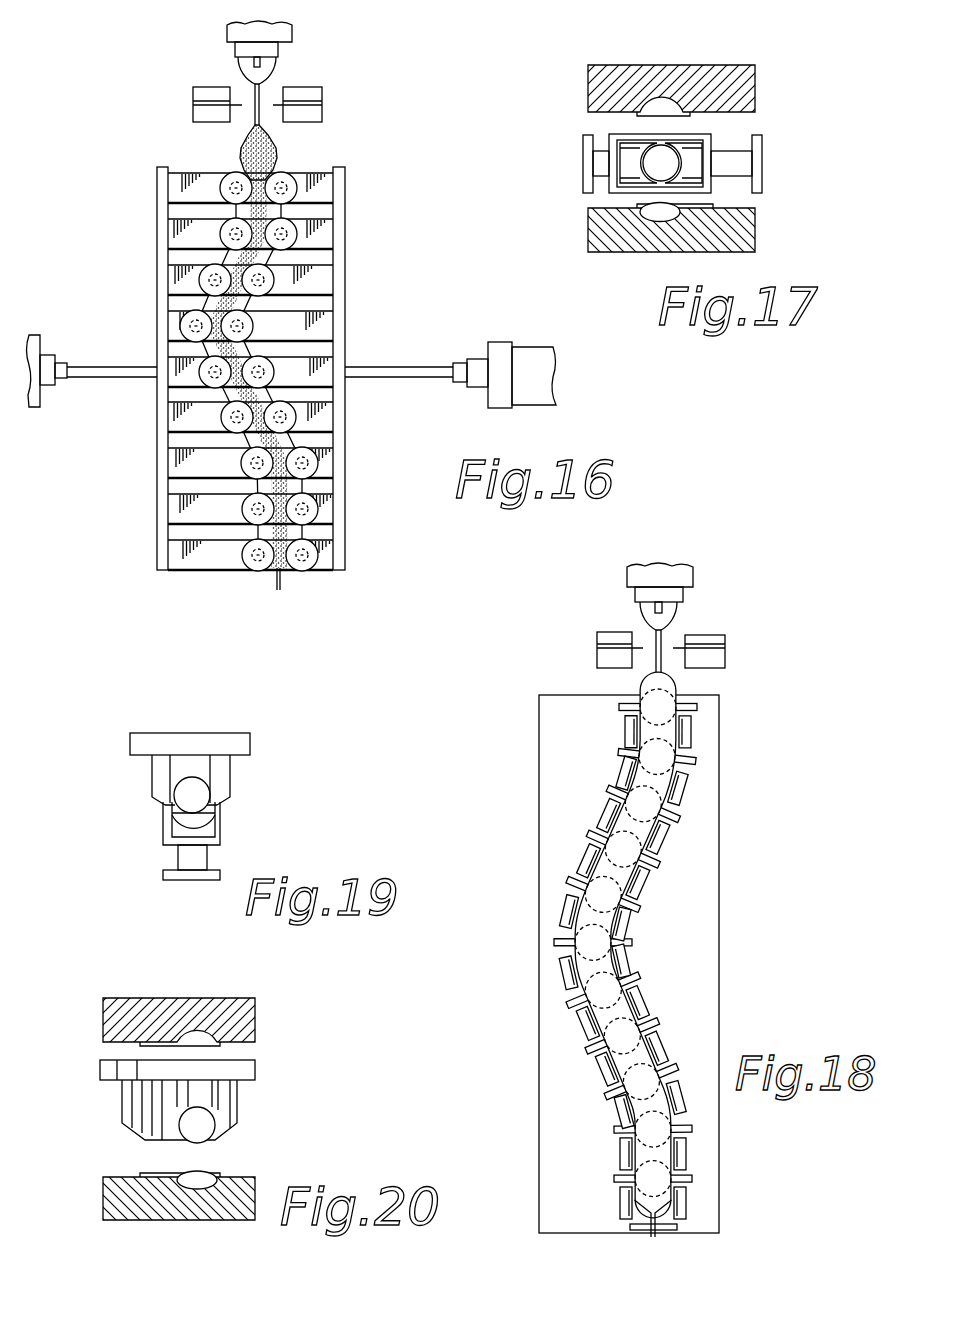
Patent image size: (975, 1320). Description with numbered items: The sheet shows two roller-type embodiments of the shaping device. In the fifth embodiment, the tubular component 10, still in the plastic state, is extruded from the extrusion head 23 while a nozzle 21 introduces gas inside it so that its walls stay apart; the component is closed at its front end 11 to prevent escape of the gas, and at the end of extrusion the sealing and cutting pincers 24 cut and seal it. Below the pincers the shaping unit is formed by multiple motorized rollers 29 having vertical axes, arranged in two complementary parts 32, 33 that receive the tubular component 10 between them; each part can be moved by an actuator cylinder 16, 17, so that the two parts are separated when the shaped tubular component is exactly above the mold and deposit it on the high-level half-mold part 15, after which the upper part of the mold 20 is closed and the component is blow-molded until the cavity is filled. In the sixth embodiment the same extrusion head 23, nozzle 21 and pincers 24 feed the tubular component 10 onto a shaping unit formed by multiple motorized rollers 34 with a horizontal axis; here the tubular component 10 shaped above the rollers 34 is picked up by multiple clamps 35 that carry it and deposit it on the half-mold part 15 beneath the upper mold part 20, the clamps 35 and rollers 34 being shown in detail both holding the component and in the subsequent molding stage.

In FIG. 16, the tubular component 10 is at (283, 447).
In FIG. 18, the tubular component 10 is at (663, 760).
In FIG. 19, the tubular component 10 is at (183, 792).
In FIG. 20, the tubular component 10 is at (188, 1123).
In FIG. 16, the end 11 is at (278, 580).
In FIG. 17, the high-level half-mold part 15 is at (660, 213).
In FIG. 20, the high-level half-mold part 15 is at (193, 1180).
In FIG. 16, the actuator cylinder 16 is at (38, 407).
In FIG. 16, the actuator cylinder 17 is at (530, 358).
In FIG. 17, the upper part of the mold 20 is at (738, 85).
In FIG. 20, the upper part of the mold 20 is at (245, 1013).
In FIG. 16, the nozzle 21 is at (272, 33).
In FIG. 18, the nozzle 21 is at (662, 577).
In FIG. 16, the extrusion head 23 is at (235, 43).
In FIG. 18, the extrusion head 23 is at (683, 592).
In FIG. 16, the sealing and cutting pincers 24 is at (203, 90).
In FIG. 18, the sealing and cutting pincers 24 is at (612, 635).
In FIG. 16, the motorized rollers 29 is at (284, 174).
In FIG. 17, the motorized rollers 29 is at (690, 157).
In FIG. 16, the complementary part of the shaping unit 32 is at (157, 427).
In FIG. 16, the complementary part of the shaping unit 33 is at (344, 442).
In FIG. 18, the motorized rollers 34 is at (575, 887).
In FIG. 19, the motorized rollers 34 is at (207, 820).
In FIG. 18, the clamps 35 is at (628, 752).
In FIG. 19, the clamps 35 is at (223, 778).
In FIG. 20, the clamps 35 is at (230, 1103).